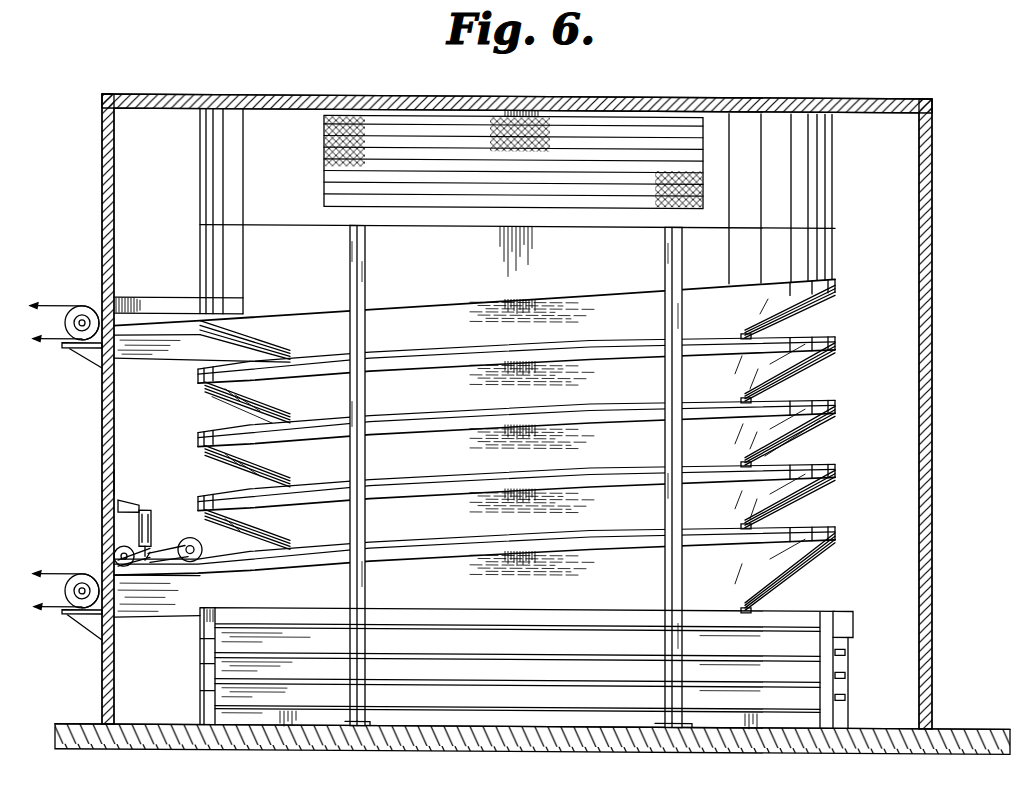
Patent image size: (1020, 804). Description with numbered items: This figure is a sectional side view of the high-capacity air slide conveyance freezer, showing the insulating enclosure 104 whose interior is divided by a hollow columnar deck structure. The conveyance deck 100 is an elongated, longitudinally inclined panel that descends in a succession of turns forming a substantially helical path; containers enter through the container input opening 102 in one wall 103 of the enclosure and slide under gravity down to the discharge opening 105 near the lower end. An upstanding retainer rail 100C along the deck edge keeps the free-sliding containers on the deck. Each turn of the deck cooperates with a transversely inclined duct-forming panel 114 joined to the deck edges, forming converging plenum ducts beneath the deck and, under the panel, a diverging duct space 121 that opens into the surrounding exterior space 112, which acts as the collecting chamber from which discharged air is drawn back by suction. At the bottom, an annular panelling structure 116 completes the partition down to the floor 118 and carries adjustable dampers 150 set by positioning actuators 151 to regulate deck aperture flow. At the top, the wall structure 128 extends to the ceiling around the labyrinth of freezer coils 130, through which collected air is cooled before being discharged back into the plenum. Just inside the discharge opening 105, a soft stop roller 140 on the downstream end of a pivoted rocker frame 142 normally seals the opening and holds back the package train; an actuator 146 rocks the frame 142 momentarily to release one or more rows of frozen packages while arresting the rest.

The conveyance deck 100 is at (474, 448).
The retainer rail 100C is at (198, 374).
The container input opening 102 is at (100, 298).
The wall 103 is at (100, 482).
The enclosure 104 is at (832, 97).
The discharge opening 105 is at (100, 558).
The exterior space 112 is at (160, 663).
The duct-forming panel 114 is at (818, 303).
The annular panelling structure 116 is at (517, 681).
The floor 118 is at (858, 726).
The duct space 121 is at (240, 417).
The wall structure 128 is at (545, 114).
The freezer coils 130 is at (678, 132).
The stop roller 140 is at (126, 514).
The rocker frame 142 is at (162, 548).
The actuator 146 is at (160, 508).
The adjustable dampers 150 is at (250, 700).
The positioning actuators 151 is at (853, 618).